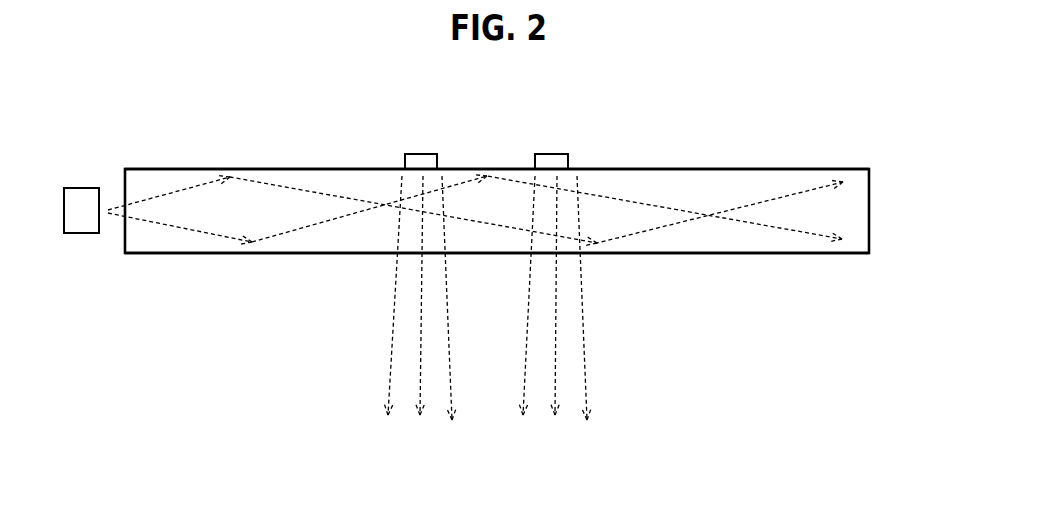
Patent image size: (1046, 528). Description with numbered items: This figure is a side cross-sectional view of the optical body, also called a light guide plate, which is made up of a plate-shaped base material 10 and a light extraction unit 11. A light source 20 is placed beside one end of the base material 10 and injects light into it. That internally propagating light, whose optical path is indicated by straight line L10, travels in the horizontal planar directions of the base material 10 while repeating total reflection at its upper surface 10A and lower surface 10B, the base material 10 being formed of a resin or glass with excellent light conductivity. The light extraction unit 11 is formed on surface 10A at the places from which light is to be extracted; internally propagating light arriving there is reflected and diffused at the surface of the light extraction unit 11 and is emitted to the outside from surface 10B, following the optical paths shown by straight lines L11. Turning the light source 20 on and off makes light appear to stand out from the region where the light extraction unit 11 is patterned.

The base material 10 is at (853, 210).
The surface of the base material 10A is at (763, 168).
The surface of the base material 10B is at (770, 255).
The light extraction unit 11 is at (417, 153).
The light source 20 is at (80, 187).
The optical path of internally propagating light L10 is at (167, 192).
The optical path of extracted light L11 is at (392, 350).